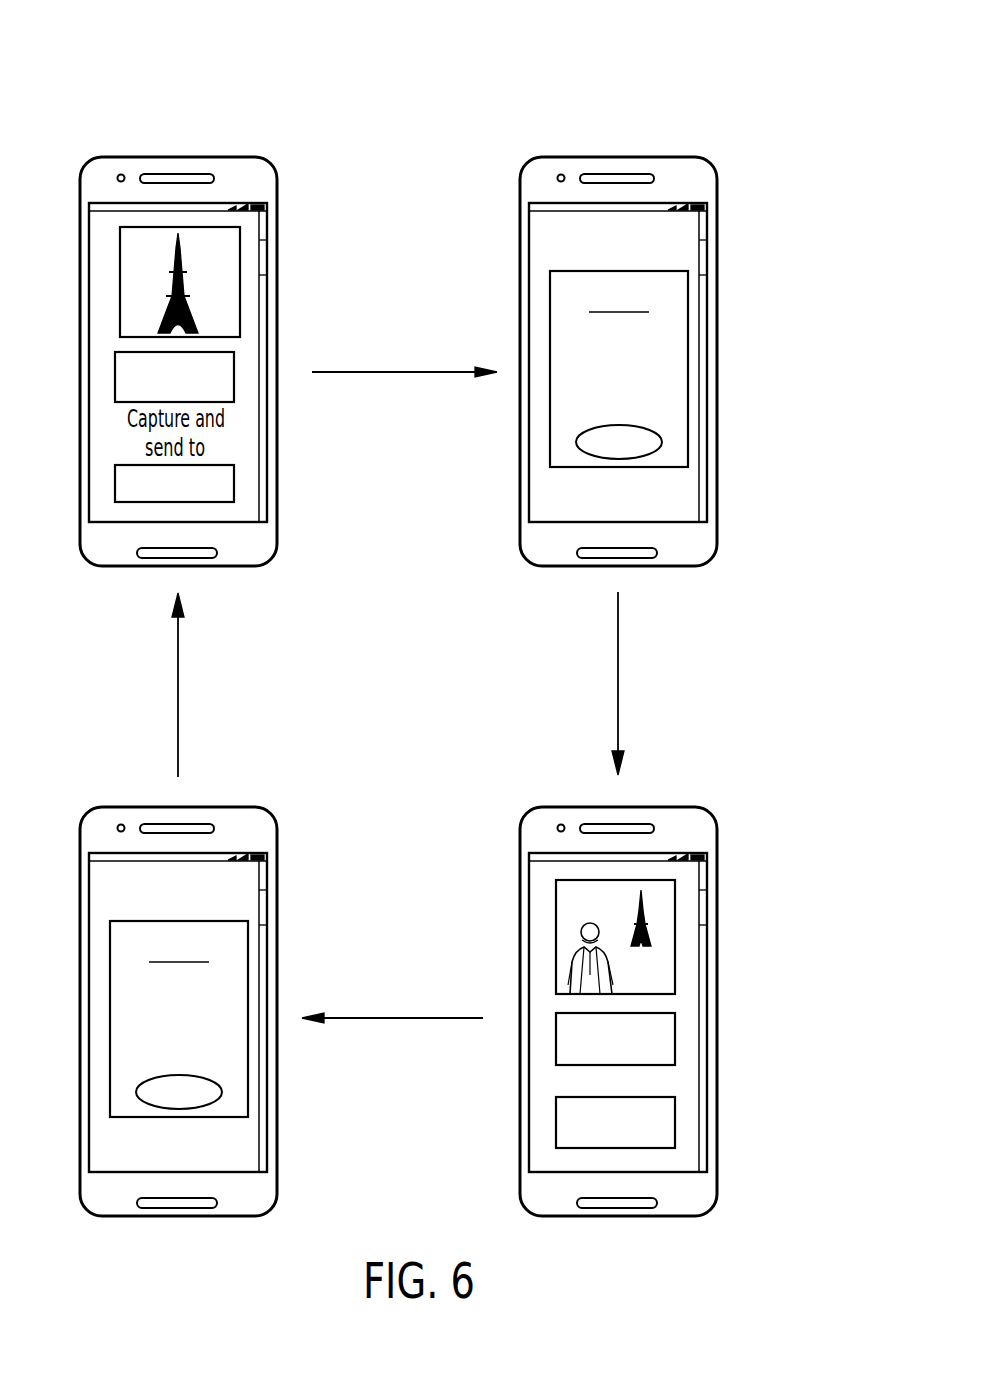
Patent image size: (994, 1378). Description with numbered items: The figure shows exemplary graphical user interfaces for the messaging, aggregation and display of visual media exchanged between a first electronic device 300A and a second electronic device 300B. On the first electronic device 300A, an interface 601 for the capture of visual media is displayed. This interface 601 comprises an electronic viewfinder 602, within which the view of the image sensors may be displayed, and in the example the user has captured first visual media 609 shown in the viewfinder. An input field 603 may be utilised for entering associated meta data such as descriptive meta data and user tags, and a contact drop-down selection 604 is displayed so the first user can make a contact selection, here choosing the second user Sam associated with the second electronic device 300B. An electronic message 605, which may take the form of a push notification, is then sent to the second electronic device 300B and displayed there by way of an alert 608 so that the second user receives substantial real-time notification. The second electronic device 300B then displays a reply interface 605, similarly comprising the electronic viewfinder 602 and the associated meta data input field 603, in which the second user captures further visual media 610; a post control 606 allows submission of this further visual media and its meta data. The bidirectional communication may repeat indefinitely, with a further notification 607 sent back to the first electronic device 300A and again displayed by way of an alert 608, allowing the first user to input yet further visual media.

The first electronic device 300A is at (163, 117).
The second electronic device 300B is at (608, 117).
The interface for the capture of visual media 601 is at (316, 219).
The electronic viewfinder 602 is at (240, 275).
The input field 603 is at (233, 377).
The contact drop-down selection 604 is at (233, 473).
The electronic message 605 is at (402, 337).
The post control 606 is at (676, 1120).
The further notification 607 is at (400, 982).
The alert 608 is at (689, 305).
The first visual media 609 is at (222, 315).
The further visual media 610 is at (648, 977).